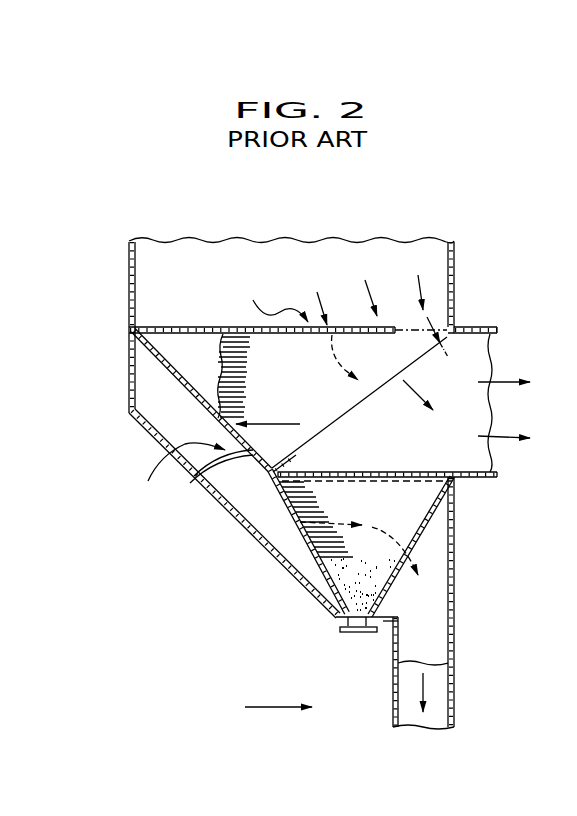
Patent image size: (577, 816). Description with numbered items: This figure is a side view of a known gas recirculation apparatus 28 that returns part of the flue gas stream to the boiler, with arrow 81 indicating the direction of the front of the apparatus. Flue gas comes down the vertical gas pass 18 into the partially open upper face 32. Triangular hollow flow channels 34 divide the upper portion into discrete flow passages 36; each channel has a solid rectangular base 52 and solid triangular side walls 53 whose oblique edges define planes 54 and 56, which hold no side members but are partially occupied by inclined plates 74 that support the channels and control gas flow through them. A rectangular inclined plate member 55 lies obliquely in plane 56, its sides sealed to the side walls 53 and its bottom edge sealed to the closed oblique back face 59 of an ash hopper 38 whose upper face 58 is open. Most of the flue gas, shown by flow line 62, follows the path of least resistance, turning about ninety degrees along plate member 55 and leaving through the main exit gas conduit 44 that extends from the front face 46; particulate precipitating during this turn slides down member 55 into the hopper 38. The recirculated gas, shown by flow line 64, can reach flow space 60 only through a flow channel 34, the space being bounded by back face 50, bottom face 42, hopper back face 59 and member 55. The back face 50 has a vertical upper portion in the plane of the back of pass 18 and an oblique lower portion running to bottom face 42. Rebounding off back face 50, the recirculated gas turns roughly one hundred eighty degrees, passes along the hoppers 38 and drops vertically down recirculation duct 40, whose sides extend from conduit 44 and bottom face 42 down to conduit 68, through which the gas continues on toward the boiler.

The vertical gas pass 18 is at (312, 273).
The gas recirculation apparatus 28 is at (180, 600).
The upper face 32 is at (160, 327).
The flow channel 34 is at (227, 352).
The flow passage 36 is at (458, 456).
The ash hopper 38 is at (318, 547).
The recirculation duct 40 is at (455, 634).
The bottom face 42 is at (388, 625).
The main exit gas conduit 44 is at (470, 479).
The front face 46 is at (455, 276).
The back face 50 is at (131, 413).
The base of channel 52 is at (343, 327).
The side wall 53 is at (284, 399).
The plane 54 is at (313, 442).
The inclined plate member 55 is at (146, 357).
The plane 56 is at (216, 423).
The upper face of hopper 58 is at (420, 466).
The oblique face of hopper 59 is at (296, 536).
The flow space 60 is at (253, 494).
The flow line 62 is at (371, 293).
The flow line 64 is at (338, 364).
The conduit 68 is at (400, 690).
The inclined plate 74 is at (193, 481).
The arrow 81 is at (260, 705).